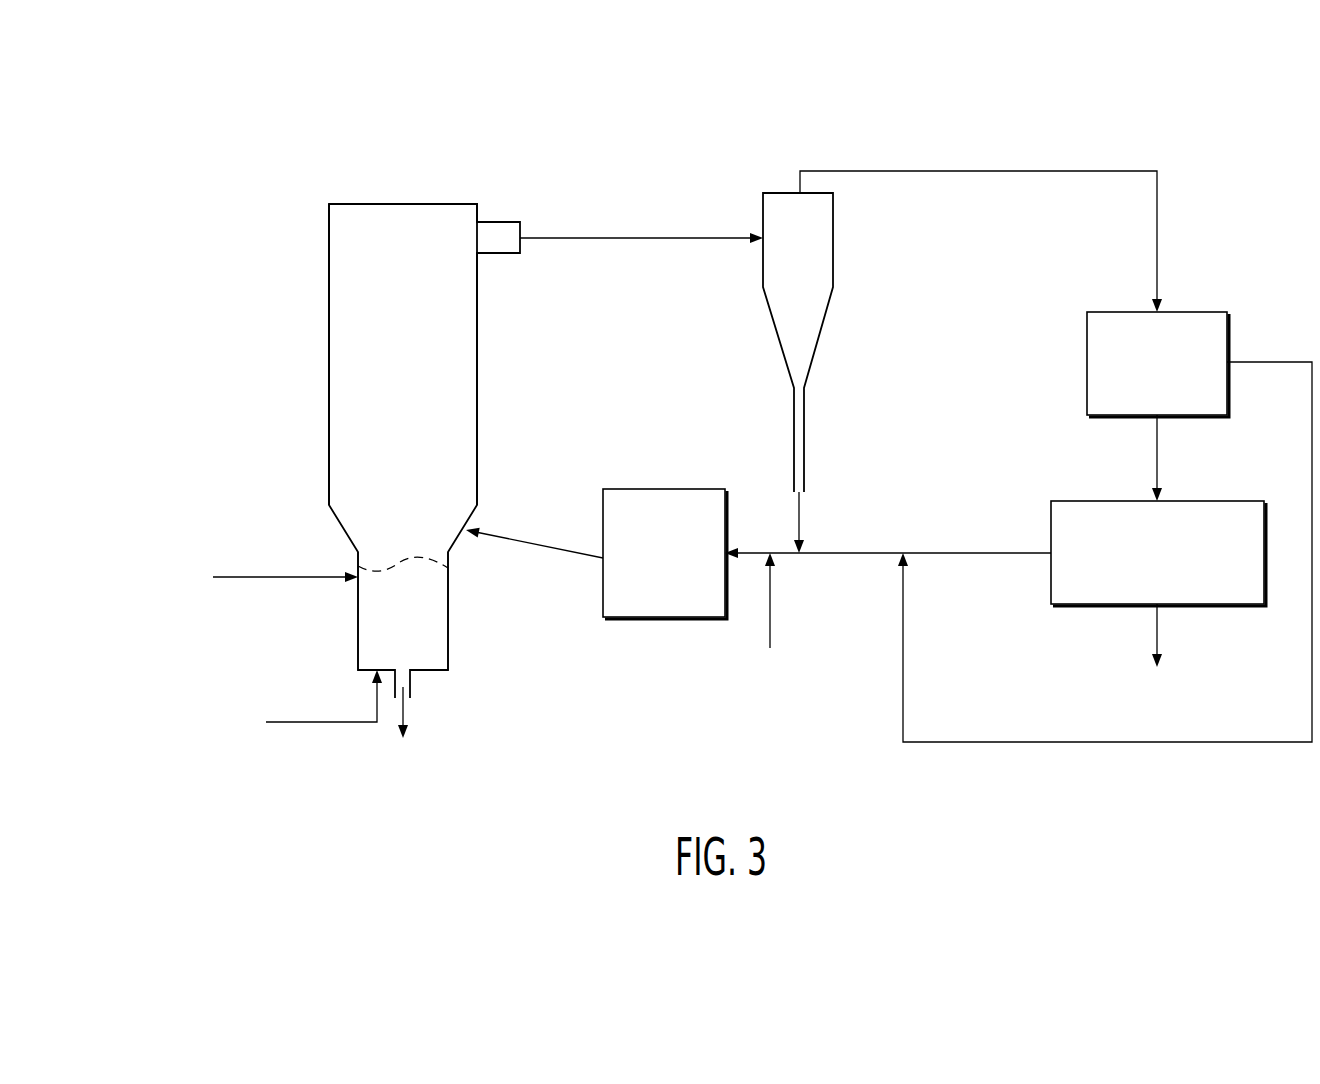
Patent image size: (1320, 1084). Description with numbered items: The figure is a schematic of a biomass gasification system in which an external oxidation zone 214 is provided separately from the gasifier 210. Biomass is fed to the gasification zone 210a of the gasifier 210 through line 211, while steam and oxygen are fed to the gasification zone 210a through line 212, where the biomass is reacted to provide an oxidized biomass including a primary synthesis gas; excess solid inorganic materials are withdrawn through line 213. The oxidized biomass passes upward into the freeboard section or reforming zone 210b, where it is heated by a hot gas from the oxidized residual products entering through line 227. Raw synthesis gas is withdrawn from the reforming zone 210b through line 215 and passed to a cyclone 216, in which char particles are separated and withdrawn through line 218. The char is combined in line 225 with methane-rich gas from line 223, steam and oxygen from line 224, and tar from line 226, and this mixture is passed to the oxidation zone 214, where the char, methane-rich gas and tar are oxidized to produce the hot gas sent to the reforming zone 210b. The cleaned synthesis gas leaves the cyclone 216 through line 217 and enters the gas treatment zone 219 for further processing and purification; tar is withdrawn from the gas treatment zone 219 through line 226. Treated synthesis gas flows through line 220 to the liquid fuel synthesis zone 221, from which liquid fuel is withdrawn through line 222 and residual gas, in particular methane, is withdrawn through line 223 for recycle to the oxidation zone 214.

The gasifier 210 is at (329, 396).
The gasification zone 210a is at (287, 641).
The reforming zone 210b is at (372, 294).
The line 211 is at (290, 576).
The line 212 is at (310, 725).
The line 213 is at (404, 712).
The external oxidation zone 214 is at (680, 605).
The line 215 is at (634, 235).
The cyclone 216 is at (777, 340).
The line 217 is at (1085, 170).
The line 218 is at (800, 512).
The gas treatment zone 219 is at (1175, 401).
The line 220 is at (1155, 447).
The liquid fuel synthesis zone 221 is at (1175, 588).
The line 222 is at (1157, 629).
The line 223 is at (963, 552).
The line 224 is at (770, 622).
The line 225 is at (758, 552).
The line 226 is at (1287, 743).
The line 227 is at (517, 548).